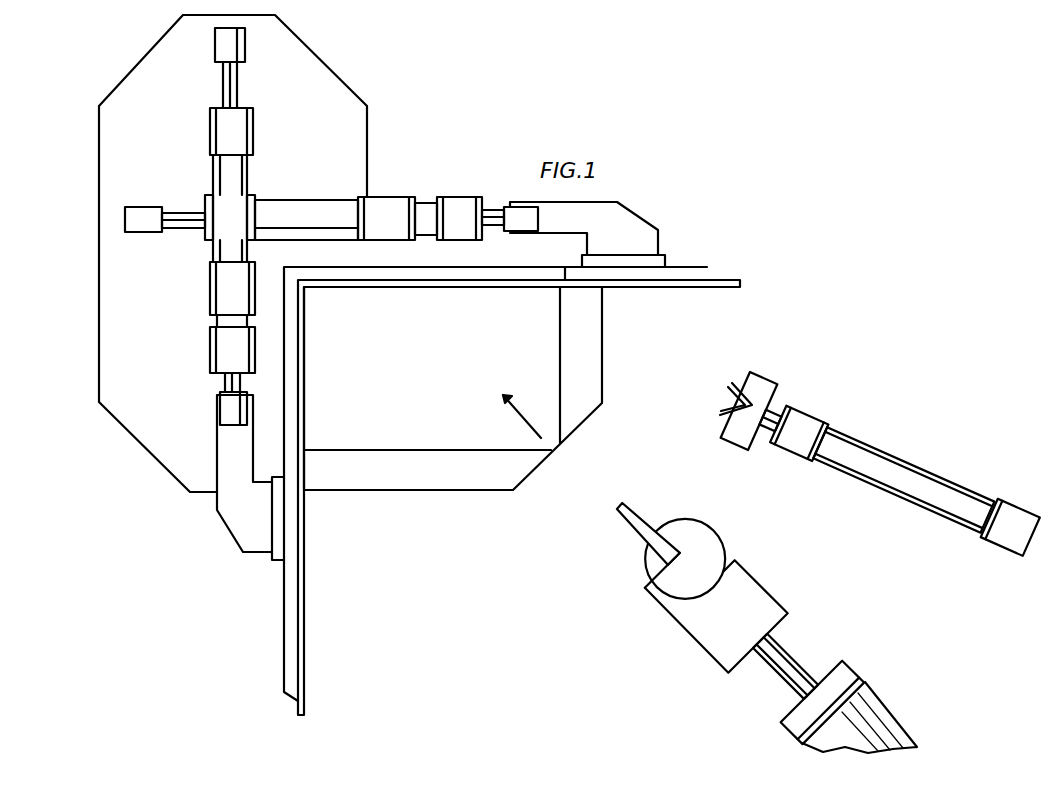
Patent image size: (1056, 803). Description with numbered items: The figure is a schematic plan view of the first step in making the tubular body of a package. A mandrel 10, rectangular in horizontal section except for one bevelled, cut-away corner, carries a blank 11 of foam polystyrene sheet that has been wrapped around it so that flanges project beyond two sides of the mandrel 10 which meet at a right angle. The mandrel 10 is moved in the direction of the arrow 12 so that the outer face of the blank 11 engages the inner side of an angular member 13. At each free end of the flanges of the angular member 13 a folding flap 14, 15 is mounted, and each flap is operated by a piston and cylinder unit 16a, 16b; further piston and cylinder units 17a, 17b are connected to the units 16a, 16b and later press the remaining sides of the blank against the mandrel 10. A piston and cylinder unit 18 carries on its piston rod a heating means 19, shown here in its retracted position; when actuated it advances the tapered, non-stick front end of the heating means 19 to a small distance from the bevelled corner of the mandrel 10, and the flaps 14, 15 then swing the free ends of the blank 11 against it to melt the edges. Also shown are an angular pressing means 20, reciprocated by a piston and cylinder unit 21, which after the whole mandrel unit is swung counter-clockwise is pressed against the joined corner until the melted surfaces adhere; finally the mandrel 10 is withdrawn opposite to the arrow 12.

The mandrel 10 is at (437, 437).
The blank 11 is at (308, 697).
The arrow 12 is at (517, 413).
The angular member 13 is at (522, 277).
The folding flap 14 is at (723, 278).
The folding flap 15 is at (284, 580).
The piston and cylinder unit 16a is at (225, 175).
The piston and cylinder unit 16b is at (336, 207).
The piston and cylinder unit 17a is at (220, 350).
The piston and cylinder unit 17b is at (457, 210).
The piston and cylinder unit 18 is at (868, 713).
The heating means 19 is at (648, 537).
The angular pressing means 20 is at (733, 387).
The piston and cylinder unit 21 is at (908, 468).